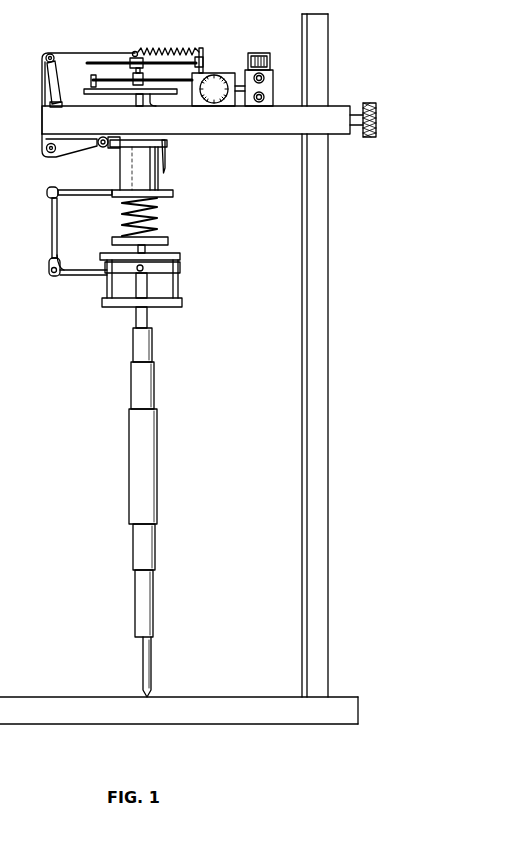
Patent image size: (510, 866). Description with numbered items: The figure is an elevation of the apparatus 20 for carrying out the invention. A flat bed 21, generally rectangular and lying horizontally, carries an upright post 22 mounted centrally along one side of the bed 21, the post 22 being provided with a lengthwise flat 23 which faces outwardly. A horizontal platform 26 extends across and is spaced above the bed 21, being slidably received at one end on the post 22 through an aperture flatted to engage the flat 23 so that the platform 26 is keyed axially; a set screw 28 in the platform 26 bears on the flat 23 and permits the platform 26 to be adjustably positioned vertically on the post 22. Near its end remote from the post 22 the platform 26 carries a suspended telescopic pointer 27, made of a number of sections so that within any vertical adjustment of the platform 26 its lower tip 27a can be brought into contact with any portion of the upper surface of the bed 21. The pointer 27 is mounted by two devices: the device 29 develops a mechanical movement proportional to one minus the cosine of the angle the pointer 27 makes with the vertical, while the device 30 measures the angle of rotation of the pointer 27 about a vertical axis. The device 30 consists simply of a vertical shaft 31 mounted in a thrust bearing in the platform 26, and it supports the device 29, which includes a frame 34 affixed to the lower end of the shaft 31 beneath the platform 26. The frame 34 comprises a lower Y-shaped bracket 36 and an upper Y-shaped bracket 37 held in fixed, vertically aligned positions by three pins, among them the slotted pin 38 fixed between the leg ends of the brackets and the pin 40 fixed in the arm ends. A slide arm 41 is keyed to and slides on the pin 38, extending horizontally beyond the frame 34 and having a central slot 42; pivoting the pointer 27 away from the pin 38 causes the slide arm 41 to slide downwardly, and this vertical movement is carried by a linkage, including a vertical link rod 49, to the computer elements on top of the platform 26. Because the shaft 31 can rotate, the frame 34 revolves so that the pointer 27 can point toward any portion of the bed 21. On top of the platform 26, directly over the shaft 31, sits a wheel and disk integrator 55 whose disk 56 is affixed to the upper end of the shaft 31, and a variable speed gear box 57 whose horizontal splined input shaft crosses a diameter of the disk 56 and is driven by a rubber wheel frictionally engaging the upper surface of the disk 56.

The apparatus 20 is at (117, 496).
The flat bed 21 is at (58, 697).
The upright post 22 is at (312, 396).
The lengthwise flat 23 is at (328, 346).
The horizontal platform 26 is at (205, 134).
The telescopic pointer 27 is at (136, 456).
The lower tip 27a is at (150, 697).
The set screw 28 is at (369, 103).
The device 29 is at (188, 212).
The device 30 is at (112, 101).
The vertical shaft 31 is at (146, 100).
The frame 34 is at (169, 312).
The lower Y-shaped bracket 36 is at (125, 308).
The upper Y-shaped bracket 37 is at (112, 243).
The slide pin 38 is at (180, 284).
The vertical pin 40 is at (106, 294).
The slide arm 41 is at (74, 276).
The central slot 42 is at (67, 258).
The vertical link rod 49 is at (52, 228).
The wheel and disk integrator 55 is at (121, 50).
The disk 56 is at (92, 91).
The variable speed gear box 57 is at (214, 71).